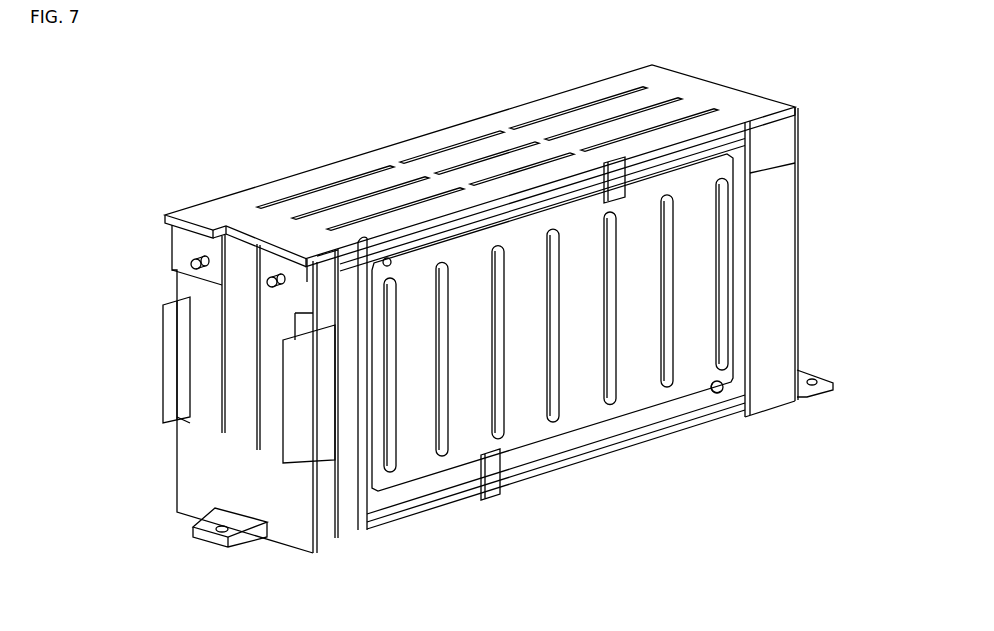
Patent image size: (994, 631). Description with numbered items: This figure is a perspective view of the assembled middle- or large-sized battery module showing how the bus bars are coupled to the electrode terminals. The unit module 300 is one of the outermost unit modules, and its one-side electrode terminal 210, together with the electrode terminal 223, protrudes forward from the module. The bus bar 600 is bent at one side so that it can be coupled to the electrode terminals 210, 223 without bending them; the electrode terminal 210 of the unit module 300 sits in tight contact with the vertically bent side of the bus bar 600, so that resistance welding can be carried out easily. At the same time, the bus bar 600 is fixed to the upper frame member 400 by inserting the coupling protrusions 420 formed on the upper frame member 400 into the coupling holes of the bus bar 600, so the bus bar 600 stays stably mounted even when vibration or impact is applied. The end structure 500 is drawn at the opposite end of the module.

The upper frame member 400 is at (356, 160).
The coupling protrusions 420 is at (190, 257).
The bus bar 600 is at (187, 290).
The electrode terminal 223 is at (163, 392).
The electrode terminal 210 is at (297, 443).
The unit module 300 is at (430, 472).
The side end plate 500 is at (787, 272).